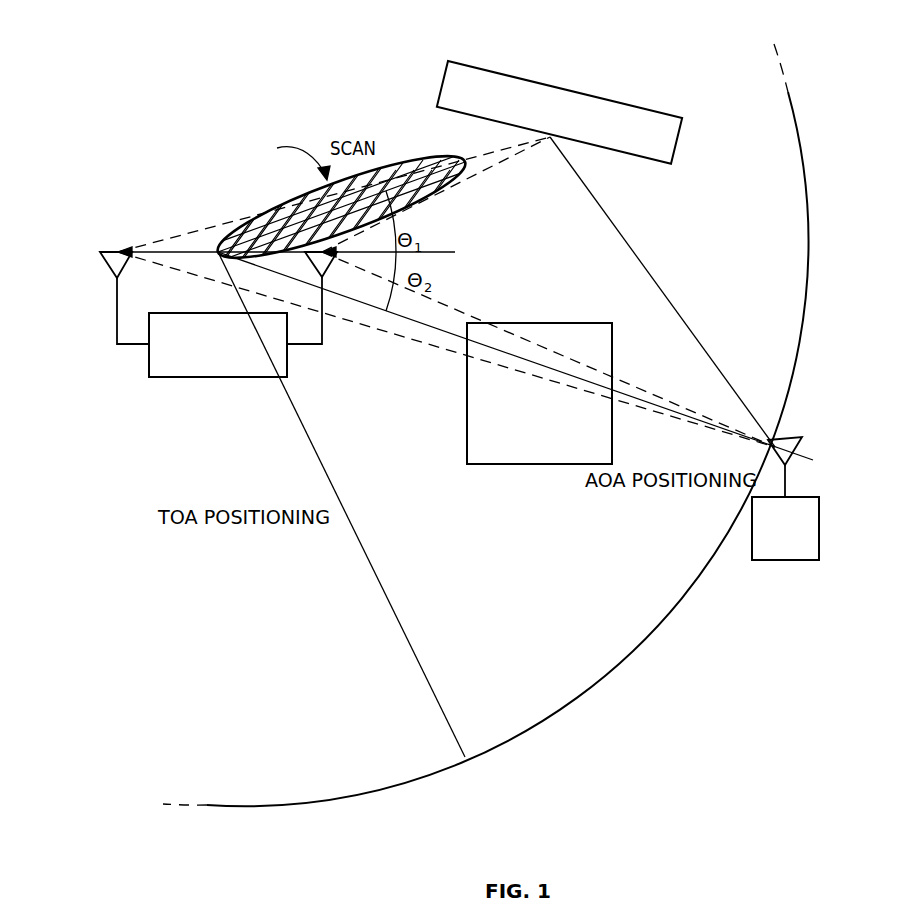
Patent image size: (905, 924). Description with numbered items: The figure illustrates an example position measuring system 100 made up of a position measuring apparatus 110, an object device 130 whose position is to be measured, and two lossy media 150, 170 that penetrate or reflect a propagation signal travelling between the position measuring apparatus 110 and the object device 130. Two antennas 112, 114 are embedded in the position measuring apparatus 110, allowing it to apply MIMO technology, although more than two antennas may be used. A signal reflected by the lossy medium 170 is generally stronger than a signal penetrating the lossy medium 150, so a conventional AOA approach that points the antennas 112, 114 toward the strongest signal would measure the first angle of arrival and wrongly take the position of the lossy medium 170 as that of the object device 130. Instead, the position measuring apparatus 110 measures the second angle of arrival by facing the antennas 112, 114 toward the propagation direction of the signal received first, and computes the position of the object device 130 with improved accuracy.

The position measuring system 100 is at (108, 80).
The position measuring apparatus 110 is at (168, 378).
The antenna 112 is at (101, 252).
The antenna 114 is at (331, 256).
The object device 130 is at (819, 527).
The lossy medium 150 is at (507, 465).
The lossy medium 170 is at (593, 96).